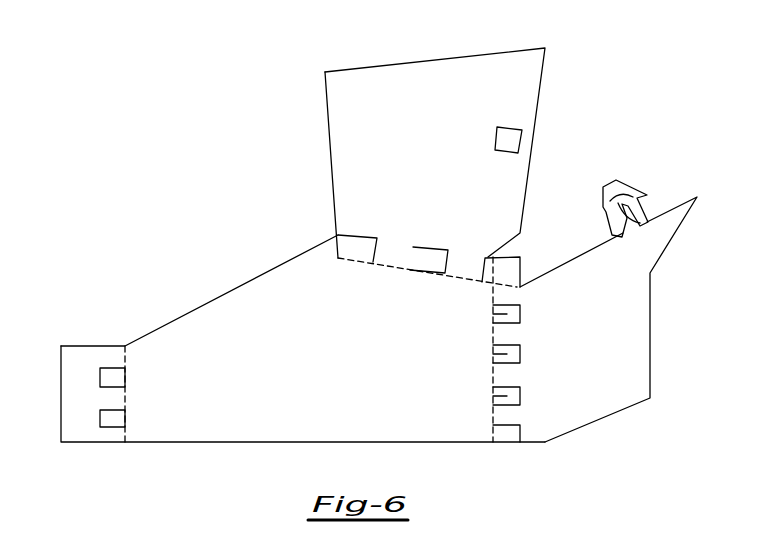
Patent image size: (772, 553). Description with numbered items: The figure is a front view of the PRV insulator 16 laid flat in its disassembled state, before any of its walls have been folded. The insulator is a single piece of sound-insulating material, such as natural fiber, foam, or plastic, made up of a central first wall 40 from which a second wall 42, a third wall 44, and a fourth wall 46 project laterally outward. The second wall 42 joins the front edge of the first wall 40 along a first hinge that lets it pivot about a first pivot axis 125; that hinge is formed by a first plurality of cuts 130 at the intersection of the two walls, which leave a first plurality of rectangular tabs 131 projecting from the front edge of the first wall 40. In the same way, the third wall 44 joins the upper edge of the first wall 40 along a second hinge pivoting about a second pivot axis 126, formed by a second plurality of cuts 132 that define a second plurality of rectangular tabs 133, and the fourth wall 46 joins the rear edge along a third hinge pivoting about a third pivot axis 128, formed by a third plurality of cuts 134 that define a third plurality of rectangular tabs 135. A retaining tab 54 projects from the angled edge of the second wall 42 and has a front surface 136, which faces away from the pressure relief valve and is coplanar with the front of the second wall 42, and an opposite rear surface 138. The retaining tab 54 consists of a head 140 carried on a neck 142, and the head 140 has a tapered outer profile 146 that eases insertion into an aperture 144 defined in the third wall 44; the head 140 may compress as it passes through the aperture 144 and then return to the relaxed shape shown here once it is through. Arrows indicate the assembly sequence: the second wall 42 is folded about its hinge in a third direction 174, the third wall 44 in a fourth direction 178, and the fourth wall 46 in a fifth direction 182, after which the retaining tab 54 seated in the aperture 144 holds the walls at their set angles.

The PRV insulator 16 is at (166, 114).
The first wall 40 is at (293, 412).
The second wall 42 is at (628, 350).
The third wall 44 is at (417, 72).
The fourth wall 46 is at (73, 357).
The retaining tab 54 is at (604, 168).
The first pivot axis 125 is at (490, 308).
The second pivot axis 126 is at (353, 262).
The third pivot axis 128 is at (125, 375).
The first plurality of cuts 130 is at (520, 305).
The first plurality of rectangular tabs 131 is at (493, 314).
The second plurality of cuts 132 is at (342, 232).
The second plurality of rectangular tabs 133 is at (366, 247).
The third plurality of cuts 134 is at (100, 378).
The third plurality of rectangular tabs 135 is at (113, 376).
The front surface 136 is at (650, 222).
The rear surface 138 is at (593, 199).
The head 140 is at (618, 238).
The neck 142 is at (642, 210).
The aperture 144 is at (517, 137).
The tapered outer profile 146 is at (603, 207).
The third direction 174 is at (628, 151).
The fourth direction 178 is at (553, 53).
The fifth direction 182 is at (85, 338).